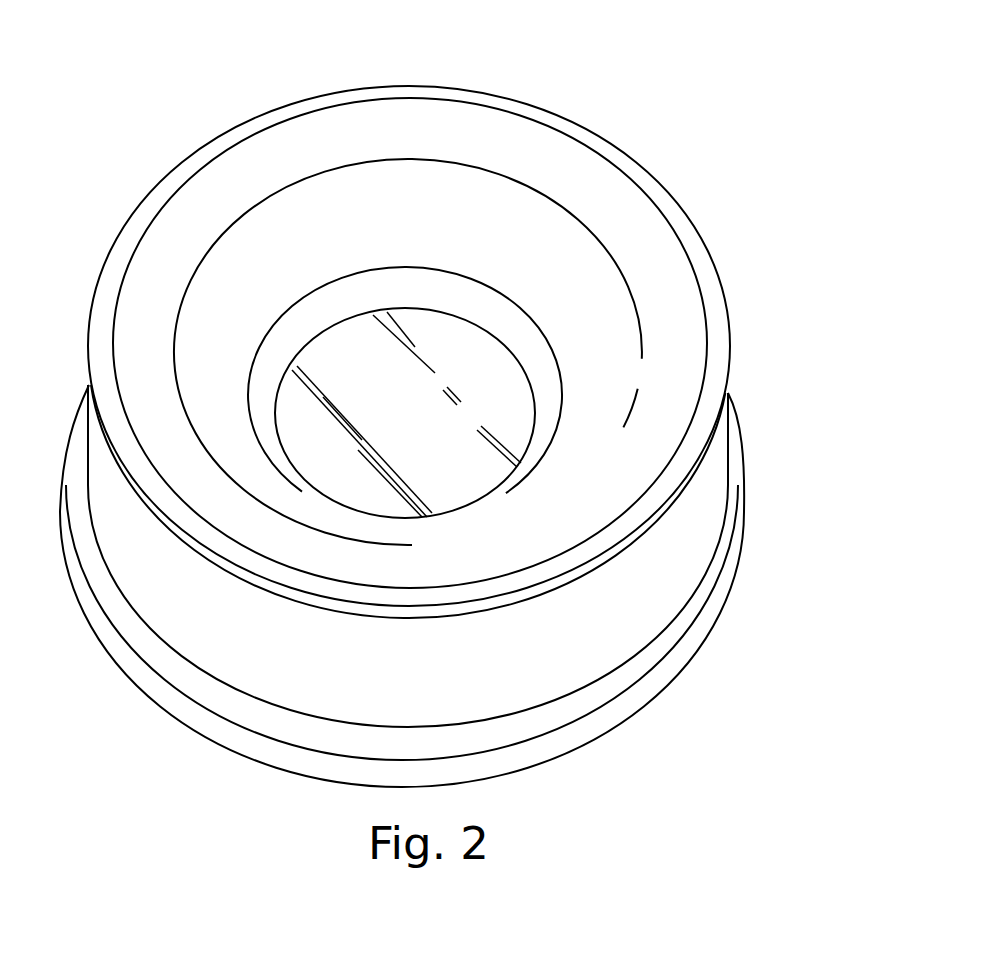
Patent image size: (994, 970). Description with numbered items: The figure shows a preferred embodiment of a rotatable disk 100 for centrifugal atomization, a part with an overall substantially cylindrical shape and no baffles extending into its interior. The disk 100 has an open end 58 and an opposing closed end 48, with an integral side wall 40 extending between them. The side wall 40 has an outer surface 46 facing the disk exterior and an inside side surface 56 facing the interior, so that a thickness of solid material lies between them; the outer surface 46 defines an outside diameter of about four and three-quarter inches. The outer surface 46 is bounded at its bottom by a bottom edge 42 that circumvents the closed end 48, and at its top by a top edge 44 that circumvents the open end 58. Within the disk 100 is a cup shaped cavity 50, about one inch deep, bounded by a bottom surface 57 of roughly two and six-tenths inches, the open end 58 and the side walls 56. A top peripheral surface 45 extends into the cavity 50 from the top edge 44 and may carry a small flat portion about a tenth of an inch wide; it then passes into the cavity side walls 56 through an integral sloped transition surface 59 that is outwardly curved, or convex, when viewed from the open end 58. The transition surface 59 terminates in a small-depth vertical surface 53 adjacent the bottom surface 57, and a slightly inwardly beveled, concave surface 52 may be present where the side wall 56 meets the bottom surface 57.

The disk 100 is at (150, 162).
The integral side wall 40 is at (717, 453).
The bottom edge 42 is at (672, 677).
The top edge 44 is at (700, 277).
The top peripheral surface 45 is at (676, 254).
The outer surface 46 is at (690, 535).
The closed end 48 is at (623, 707).
The cup shaped cavity 50 is at (312, 327).
The inwardly beveled surface 52 is at (562, 382).
The vertical surface 53 is at (557, 324).
The inside side surface 56 is at (553, 257).
The bottom surface 57 is at (460, 333).
The open end 58 is at (422, 118).
The sloped transition surface 59 is at (618, 252).